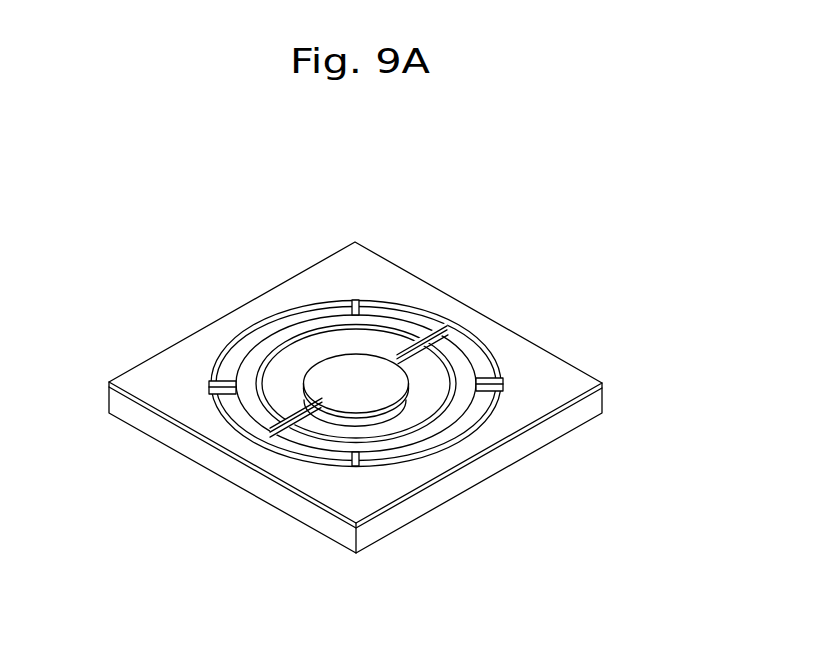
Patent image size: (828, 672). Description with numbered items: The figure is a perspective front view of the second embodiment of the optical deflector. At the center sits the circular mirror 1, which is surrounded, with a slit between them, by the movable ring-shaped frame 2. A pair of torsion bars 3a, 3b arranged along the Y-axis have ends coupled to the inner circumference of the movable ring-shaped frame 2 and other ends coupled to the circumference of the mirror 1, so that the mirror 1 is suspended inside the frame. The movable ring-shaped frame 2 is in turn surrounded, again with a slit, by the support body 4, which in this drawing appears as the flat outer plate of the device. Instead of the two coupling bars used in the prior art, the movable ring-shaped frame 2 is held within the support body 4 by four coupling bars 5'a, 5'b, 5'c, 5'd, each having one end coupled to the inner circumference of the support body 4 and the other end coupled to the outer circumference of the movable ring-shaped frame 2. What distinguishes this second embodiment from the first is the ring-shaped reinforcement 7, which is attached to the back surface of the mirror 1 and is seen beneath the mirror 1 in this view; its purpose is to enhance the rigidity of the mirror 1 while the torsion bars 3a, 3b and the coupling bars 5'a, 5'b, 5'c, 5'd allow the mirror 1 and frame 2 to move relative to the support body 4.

The circular mirror 1 is at (334, 365).
The movable ring-shaped frame 2 is at (258, 409).
The torsion bar 3a is at (408, 367).
The torsion bar 3b is at (320, 406).
The support body 4 is at (537, 397).
The coupling bar 5'a is at (585, 341).
The coupling bar 5'b is at (316, 540).
The coupling bar 5'c is at (143, 345).
The coupling bar 5'd is at (328, 229).
The ring-shaped reinforcement 7 is at (375, 422).